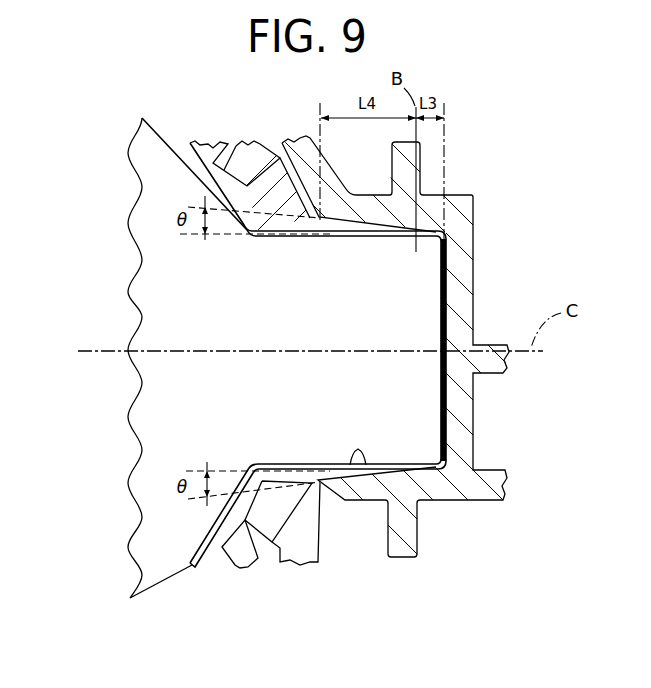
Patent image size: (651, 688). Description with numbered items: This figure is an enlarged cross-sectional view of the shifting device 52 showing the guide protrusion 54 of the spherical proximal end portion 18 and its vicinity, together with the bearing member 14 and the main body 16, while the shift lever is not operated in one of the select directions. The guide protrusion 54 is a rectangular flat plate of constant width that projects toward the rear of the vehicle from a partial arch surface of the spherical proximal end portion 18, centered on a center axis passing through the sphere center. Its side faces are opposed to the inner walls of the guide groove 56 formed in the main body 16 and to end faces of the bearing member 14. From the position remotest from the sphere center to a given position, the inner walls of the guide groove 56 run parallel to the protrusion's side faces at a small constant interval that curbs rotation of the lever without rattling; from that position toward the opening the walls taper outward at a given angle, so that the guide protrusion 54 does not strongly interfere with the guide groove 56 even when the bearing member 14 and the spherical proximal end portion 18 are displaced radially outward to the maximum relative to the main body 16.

The bearing member 14 is at (233, 582).
The main body 16 is at (442, 521).
The spherical proximal end portion 18 is at (165, 294).
The shifting device 52 is at (530, 164).
The guide protrusion 54 is at (372, 398).
The guide groove 56 is at (360, 449).